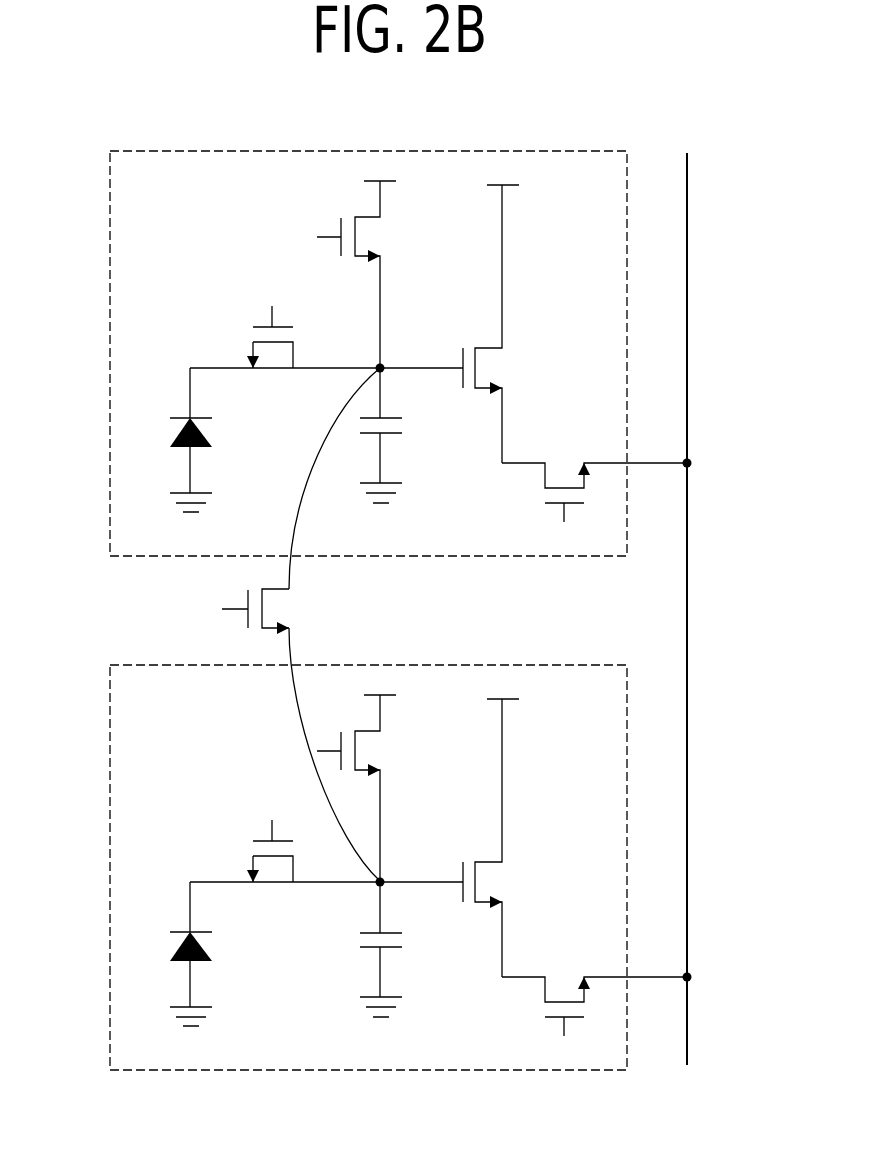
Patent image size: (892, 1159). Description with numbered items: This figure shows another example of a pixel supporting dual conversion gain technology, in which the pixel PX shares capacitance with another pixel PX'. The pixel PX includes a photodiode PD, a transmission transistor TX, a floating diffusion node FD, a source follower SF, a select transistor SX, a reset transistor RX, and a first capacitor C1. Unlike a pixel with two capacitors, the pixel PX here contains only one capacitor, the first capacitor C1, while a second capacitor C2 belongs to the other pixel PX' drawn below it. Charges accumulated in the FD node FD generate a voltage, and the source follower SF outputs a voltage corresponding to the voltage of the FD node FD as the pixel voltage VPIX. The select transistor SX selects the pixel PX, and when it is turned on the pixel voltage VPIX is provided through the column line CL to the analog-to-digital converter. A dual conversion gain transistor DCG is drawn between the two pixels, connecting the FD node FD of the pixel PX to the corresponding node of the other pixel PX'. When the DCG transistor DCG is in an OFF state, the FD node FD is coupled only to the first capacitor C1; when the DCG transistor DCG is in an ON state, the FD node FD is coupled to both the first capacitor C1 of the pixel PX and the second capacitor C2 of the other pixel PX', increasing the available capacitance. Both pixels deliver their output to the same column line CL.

The pixel PX is at (368, 323).
The another pixel PX' is at (368, 901).
The reset transistor RX is at (365, 274).
The transmission transistor TX is at (285, 357).
The photodiode PD is at (210, 440).
The floating diffusion node FD is at (396, 350).
The first capacitor C1 is at (397, 435).
The second capacitor C2 is at (397, 949).
The source follower SF is at (456, 324).
The select transistor SX is at (597, 474).
The dual conversion gain transistor DCG is at (301, 624).
The column line CL is at (687, 279).
The pixel voltage VPIX is at (715, 597).